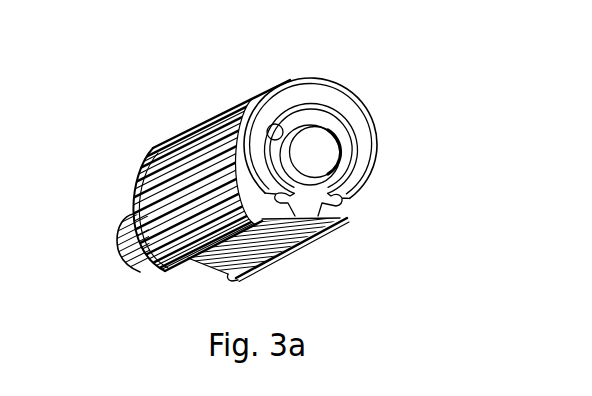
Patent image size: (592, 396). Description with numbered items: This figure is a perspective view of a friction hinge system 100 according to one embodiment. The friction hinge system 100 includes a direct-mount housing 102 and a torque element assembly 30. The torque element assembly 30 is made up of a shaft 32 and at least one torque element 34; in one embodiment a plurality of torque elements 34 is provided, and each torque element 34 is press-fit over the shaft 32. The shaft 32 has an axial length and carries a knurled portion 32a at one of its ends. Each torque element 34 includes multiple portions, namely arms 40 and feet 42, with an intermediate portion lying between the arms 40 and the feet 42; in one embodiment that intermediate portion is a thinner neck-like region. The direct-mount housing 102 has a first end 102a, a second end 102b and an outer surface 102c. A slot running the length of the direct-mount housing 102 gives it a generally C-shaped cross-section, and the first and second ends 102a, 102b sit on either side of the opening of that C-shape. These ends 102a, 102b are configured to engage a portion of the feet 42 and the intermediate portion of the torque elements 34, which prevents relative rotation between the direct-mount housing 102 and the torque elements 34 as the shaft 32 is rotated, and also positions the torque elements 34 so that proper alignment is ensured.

The friction hinge system 100 is at (168, 79).
The direct-mount housing 102 is at (348, 110).
The first end 102a is at (333, 202).
The second end 102b is at (252, 197).
The outer surface 102c is at (148, 158).
The torque element assembly 30 is at (335, 256).
The shaft 32 is at (330, 146).
The knurled portion 32a is at (118, 248).
The torque element 34 is at (294, 214).
The arms 40 is at (273, 132).
The feet 42 is at (323, 228).